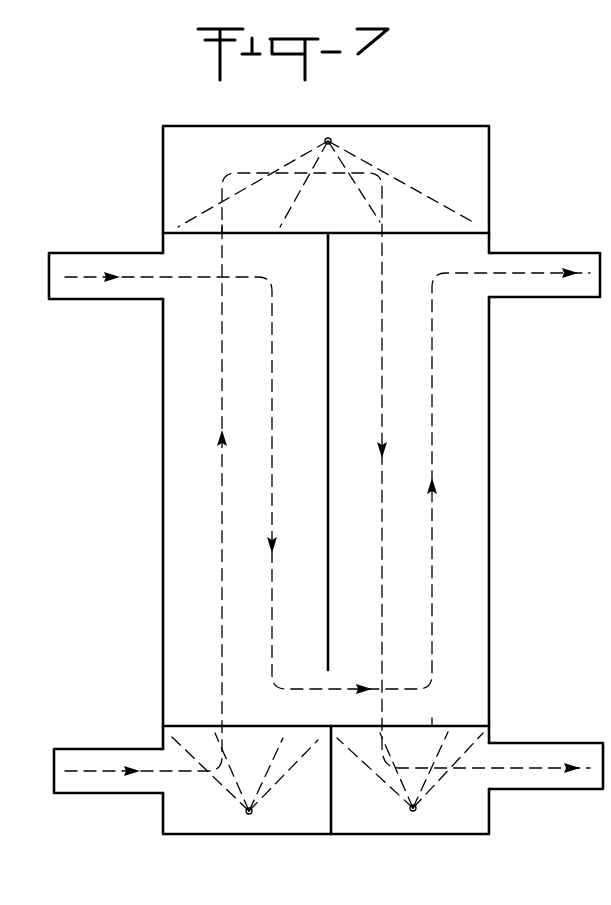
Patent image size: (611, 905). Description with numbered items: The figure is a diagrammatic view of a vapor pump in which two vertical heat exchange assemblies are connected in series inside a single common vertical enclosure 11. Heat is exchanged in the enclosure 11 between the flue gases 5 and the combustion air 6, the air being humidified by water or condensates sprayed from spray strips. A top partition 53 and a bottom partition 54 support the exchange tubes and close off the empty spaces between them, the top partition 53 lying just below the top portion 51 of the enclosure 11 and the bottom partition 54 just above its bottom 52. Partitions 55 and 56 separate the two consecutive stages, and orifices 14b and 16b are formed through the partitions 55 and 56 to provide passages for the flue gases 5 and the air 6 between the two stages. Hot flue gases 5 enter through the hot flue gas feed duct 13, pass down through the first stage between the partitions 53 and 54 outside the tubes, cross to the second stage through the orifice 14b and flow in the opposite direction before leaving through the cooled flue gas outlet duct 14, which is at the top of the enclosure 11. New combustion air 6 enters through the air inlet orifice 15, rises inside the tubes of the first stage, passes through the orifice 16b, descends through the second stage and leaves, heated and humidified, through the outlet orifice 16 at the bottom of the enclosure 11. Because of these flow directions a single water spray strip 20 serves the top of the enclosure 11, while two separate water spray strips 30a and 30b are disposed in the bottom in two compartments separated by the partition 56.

The flue gases 5 is at (273, 472).
The combustion air 6 is at (221, 474).
The common vertical enclosure 11 is at (490, 513).
The hot flue gas feed duct 13 is at (125, 252).
The cooled flue gas outlet duct 14 is at (550, 252).
The orifice 14b is at (330, 668).
The new air inlet orifice 15 is at (127, 748).
The outlet orifice 16 is at (550, 742).
The orifice 16b is at (325, 212).
The water spray strip 20 is at (330, 139).
The water spray strip 30a is at (249, 814).
The water spray strip 30b is at (413, 811).
The top portion 51 is at (457, 127).
The bottom 52 is at (200, 836).
The top partition 53 is at (260, 235).
The bottom partition 54 is at (460, 724).
The partition 55 is at (329, 412).
The partition 56 is at (333, 812).